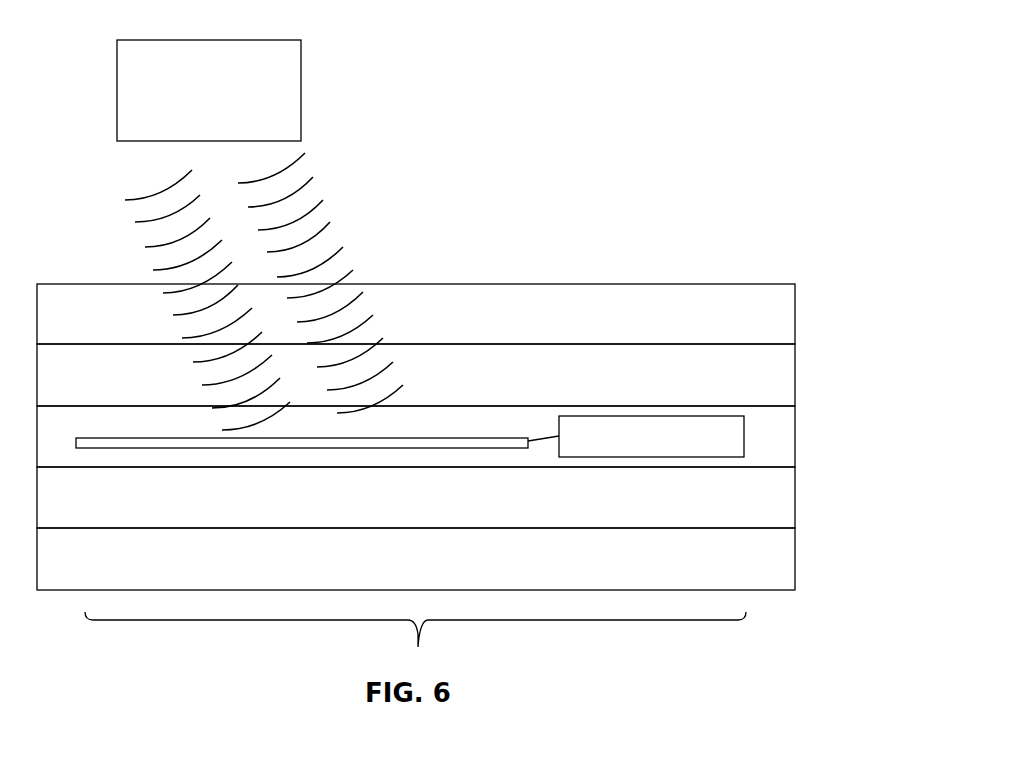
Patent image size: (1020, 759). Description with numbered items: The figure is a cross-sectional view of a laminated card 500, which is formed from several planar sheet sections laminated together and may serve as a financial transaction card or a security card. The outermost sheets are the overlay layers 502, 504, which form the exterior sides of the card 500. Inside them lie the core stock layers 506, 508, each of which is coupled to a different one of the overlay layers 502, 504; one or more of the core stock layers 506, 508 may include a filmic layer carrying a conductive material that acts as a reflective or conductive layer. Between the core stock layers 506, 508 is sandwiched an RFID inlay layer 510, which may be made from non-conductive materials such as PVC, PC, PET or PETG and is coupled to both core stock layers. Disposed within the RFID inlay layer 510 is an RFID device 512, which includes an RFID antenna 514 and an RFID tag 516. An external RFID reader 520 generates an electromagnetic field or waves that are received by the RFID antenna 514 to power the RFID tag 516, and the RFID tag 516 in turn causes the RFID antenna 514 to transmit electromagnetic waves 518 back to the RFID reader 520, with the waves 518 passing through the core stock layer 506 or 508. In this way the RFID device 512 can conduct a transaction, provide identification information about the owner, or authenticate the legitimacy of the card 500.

The laminated card 500 is at (700, 163).
The overlay layer 502 is at (795, 315).
The overlay layer 504 is at (795, 558).
The core stock layer 506 is at (795, 376).
The core stock layer 508 is at (795, 498).
The RFID inlay layer 510 is at (795, 436).
The RFID device 512 is at (418, 647).
The RFID antenna 514 is at (430, 438).
The RFID tag 516 is at (628, 416).
The electromagnetic waves 518 is at (320, 223).
The RFID reader 520 is at (301, 90).